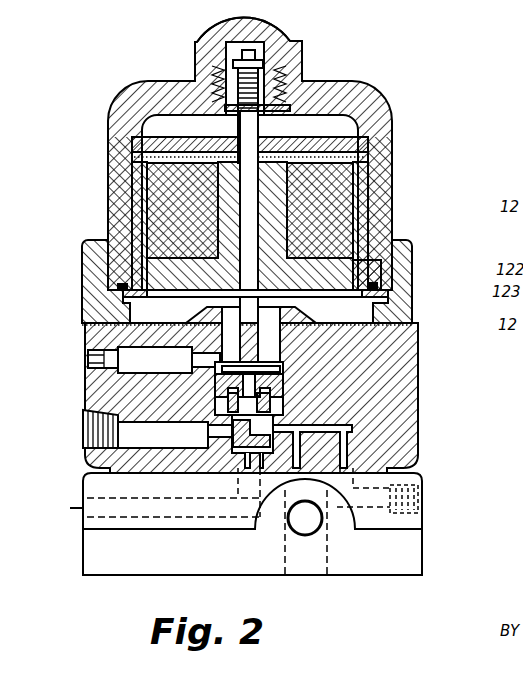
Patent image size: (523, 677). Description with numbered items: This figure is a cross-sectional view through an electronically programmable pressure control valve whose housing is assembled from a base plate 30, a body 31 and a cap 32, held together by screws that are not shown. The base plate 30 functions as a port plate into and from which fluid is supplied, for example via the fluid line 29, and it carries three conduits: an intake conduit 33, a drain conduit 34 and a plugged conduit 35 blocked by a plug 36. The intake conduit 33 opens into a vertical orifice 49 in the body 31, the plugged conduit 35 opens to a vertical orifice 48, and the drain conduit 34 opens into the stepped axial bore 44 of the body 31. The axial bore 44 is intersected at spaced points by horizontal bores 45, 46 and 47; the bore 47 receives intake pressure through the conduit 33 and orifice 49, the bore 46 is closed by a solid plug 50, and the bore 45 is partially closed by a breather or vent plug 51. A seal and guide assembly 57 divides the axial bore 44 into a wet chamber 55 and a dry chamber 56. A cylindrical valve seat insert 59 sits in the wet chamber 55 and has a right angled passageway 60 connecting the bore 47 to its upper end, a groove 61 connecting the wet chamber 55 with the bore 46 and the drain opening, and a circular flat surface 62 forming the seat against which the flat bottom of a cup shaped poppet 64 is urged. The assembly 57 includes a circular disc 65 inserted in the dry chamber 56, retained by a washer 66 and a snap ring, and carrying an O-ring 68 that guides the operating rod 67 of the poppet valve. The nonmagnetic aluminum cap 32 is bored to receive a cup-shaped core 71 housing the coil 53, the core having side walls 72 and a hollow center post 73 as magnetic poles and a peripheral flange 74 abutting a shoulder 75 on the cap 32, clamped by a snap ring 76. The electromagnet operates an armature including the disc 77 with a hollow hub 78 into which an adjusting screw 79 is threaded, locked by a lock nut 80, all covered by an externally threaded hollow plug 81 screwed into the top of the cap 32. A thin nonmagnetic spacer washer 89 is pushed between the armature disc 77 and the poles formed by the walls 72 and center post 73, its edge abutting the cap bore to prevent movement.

The fluid line 29 is at (68, 512).
The base plate 30 is at (127, 562).
The body 31 is at (415, 388).
The cap 32 is at (395, 185).
The intake conduit 33 is at (313, 538).
The drain conduit 34 is at (170, 523).
The plugged conduit 35 is at (373, 510).
The plug 36 is at (427, 492).
The axial bore 44 is at (290, 397).
The horizontal bore 45 is at (169, 360).
The horizontal bore 46 is at (175, 435).
The horizontal bore 47 is at (347, 413).
The vertical orifice 48 is at (349, 440).
The vertical orifice 49 is at (306, 447).
The solid plug 50 is at (83, 423).
The breather or vent plug 51 is at (84, 358).
The coil 53 is at (383, 224).
The wet chamber 55 is at (228, 410).
The dry chamber 56 is at (281, 360).
The seal and guide assembly 57 is at (284, 380).
The valve seat insert 59 is at (243, 472).
The right angled passageway 60 is at (280, 420).
The passageway or groove 61 is at (238, 465).
The circular flat surface 62 is at (226, 450).
The cup shaped poppet 64 is at (226, 396).
The circular disc 65 is at (215, 360).
The washer 66 is at (305, 370).
The operating rod 67 is at (259, 324).
The O-ring 68 is at (242, 375).
The core 71 is at (381, 276).
The side walls 72 is at (413, 251).
The hollow center post 73 is at (276, 228).
The peripheral flange 74 is at (178, 260).
The shoulder 75 is at (118, 302).
The snap ring 76 is at (120, 290).
The armature disc 77 is at (228, 143).
The hollow hub 78 is at (290, 90).
The adjusting screw 79 is at (259, 128).
The lock nut 80 is at (260, 56).
The hollow plug 81 is at (232, 40).
The spacer washer 89 is at (302, 211).